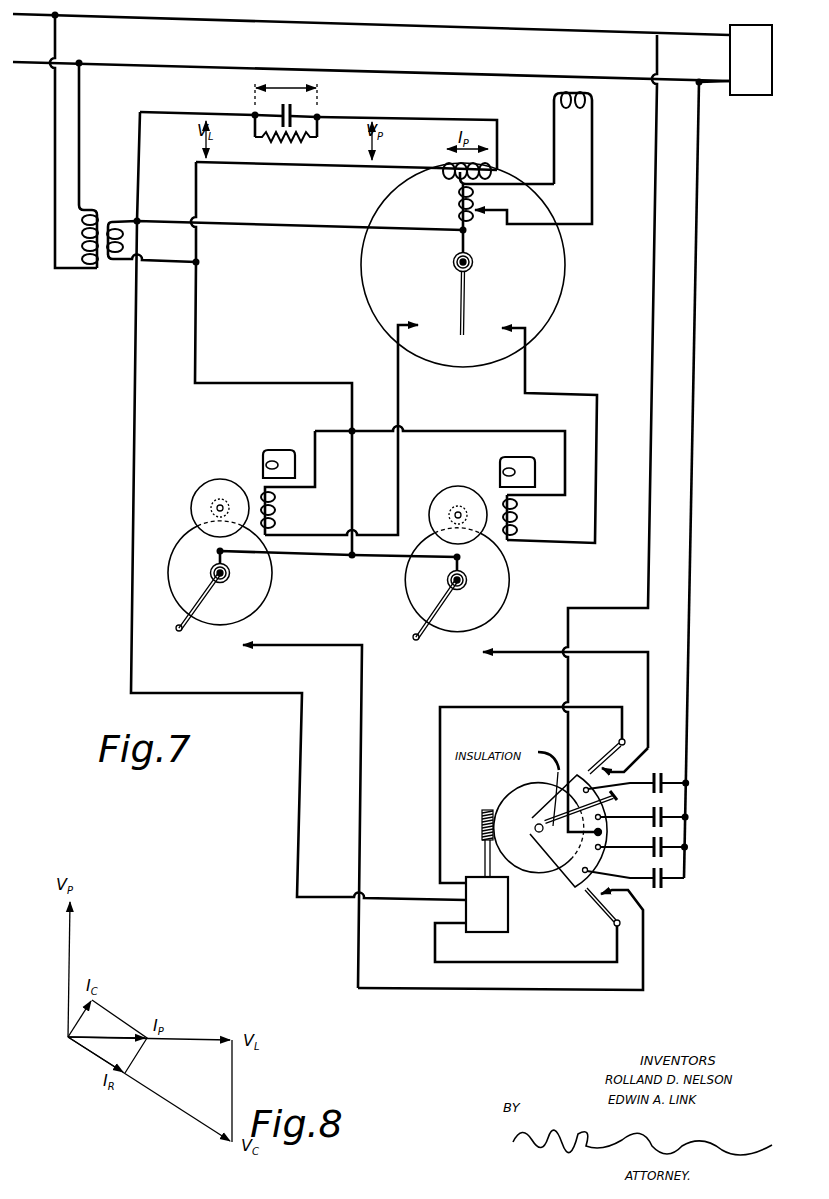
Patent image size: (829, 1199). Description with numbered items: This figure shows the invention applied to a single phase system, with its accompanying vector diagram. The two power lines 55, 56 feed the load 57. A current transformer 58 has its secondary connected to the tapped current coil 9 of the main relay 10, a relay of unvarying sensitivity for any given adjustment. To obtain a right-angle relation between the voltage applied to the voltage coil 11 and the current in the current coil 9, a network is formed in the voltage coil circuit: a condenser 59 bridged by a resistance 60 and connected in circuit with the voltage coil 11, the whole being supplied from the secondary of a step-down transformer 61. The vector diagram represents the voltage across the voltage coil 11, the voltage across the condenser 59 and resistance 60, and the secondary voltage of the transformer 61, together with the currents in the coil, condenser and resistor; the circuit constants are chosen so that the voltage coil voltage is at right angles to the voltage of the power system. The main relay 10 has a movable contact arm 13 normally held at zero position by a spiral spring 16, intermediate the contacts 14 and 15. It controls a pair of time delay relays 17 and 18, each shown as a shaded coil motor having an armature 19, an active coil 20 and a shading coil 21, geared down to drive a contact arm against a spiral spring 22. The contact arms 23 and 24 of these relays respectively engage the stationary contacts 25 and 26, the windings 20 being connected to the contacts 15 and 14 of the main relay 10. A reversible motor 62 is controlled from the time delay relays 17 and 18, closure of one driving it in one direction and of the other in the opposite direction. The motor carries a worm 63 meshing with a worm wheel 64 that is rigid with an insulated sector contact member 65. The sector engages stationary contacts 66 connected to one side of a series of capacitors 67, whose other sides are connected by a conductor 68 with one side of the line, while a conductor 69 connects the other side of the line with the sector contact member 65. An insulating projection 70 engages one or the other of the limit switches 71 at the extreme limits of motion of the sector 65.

The tapped current coil 9 is at (455, 210).
The main relay 10 is at (568, 291).
The voltage coil 11 is at (444, 180).
The movable contact arm 13 is at (461, 289).
The contact 14 is at (505, 322).
The contact 15 is at (420, 318).
The spiral spring 16 is at (472, 262).
The time delay relay 17 is at (272, 603).
The time delay relay 18 is at (512, 599).
The armature 19 is at (196, 494).
The active coil 20 is at (282, 510).
The shading coil 21 is at (262, 457).
The spiral spring 22 is at (211, 572).
The contact arm 23 is at (185, 634).
The contact arm 24 is at (423, 642).
The stationary contact 25 is at (242, 652).
The stationary contact 26 is at (485, 660).
The power line 55 is at (566, 36).
The power line 56 is at (462, 73).
The load 57 is at (748, 97).
The current transformer 58 is at (597, 99).
The condenser 59 is at (296, 110).
The resistance 60 is at (292, 145).
The step-down transformer 61 is at (104, 270).
The reversible motor 62 is at (505, 918).
The worm 63 is at (480, 825).
The worm wheel 64 is at (522, 790).
The sector contact member 65 is at (568, 882).
The stationary contacts 66 is at (604, 843).
The capacitors 67 is at (660, 898).
The conductor 68 is at (690, 585).
The conductor 69 is at (648, 566).
The insulating projection 70 is at (616, 800).
The limit switches 71 is at (596, 765).